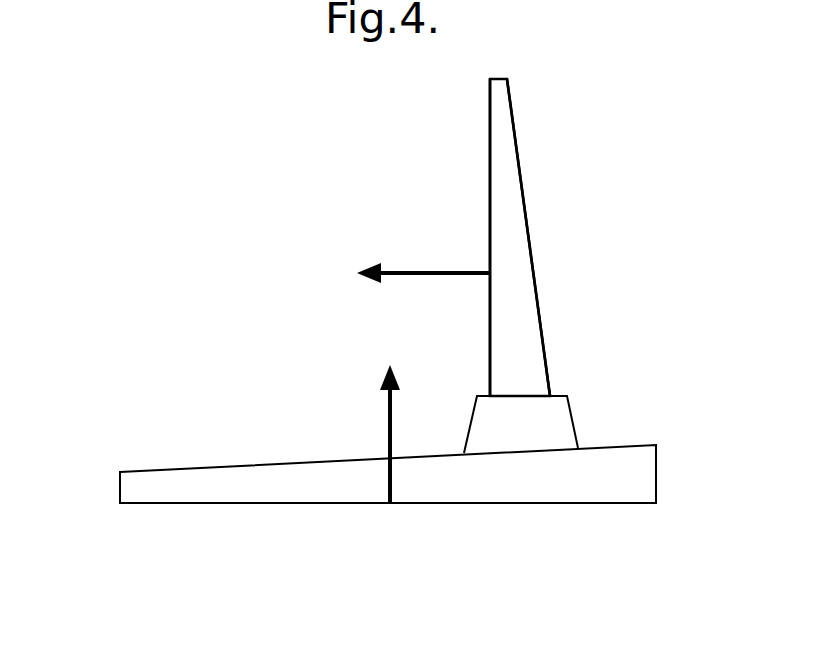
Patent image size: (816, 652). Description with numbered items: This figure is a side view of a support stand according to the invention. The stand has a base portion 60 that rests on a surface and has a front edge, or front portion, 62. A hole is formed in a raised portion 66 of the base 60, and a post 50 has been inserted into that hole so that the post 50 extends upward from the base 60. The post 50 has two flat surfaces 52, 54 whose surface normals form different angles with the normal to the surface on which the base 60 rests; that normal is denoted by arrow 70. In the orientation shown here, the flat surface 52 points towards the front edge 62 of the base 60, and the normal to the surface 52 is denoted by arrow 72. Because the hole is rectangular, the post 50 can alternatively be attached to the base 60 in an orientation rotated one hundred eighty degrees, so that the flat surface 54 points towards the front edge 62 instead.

The post 50 is at (500, 125).
The flat surface 52 is at (478, 167).
The flat surface 54 is at (546, 267).
The raised portion 66 is at (535, 425).
The base portion 60 is at (562, 482).
The front edge 62 is at (120, 492).
The normal to the surface on which the base rests 70 is at (389, 420).
The normal to the surface 52 72 is at (404, 275).